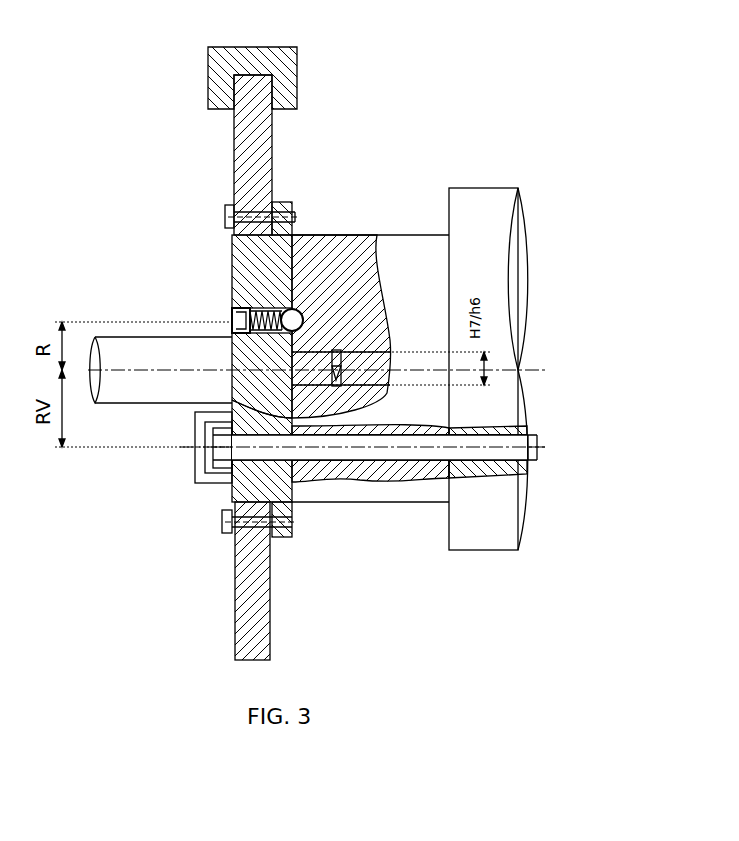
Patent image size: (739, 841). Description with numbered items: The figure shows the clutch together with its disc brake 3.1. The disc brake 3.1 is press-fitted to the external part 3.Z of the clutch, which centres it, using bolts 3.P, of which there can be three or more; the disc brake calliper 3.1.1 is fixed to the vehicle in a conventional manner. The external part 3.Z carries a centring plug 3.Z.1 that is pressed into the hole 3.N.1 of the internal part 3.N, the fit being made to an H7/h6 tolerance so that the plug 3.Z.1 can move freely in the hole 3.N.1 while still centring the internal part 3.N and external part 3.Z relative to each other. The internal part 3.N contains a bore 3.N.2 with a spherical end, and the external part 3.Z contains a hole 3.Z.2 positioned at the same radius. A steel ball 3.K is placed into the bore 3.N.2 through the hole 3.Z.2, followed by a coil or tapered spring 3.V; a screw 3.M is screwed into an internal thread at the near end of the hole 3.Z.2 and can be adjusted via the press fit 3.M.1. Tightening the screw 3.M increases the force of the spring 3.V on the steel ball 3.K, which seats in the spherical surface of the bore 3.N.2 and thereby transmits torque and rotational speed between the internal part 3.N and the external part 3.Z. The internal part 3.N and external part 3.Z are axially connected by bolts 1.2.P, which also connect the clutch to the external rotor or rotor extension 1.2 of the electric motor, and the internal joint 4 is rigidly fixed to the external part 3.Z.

The disc brake calliper 3.1.1 is at (285, 80).
The disc brake 3.1 is at (240, 596).
The bolts 3.P is at (229, 212).
The external part of clutch 3.Z is at (198, 482).
The coil spring 3.V is at (232, 305).
The screw 3.M is at (232, 316).
The press fit 3.M.1 is at (232, 320).
The steel ball 3.K is at (323, 236).
The internal part of clutch 3.N is at (232, 308).
The bore with spherical end 3.N.2 is at (318, 292).
The hole of internal part 3.N.1 is at (386, 356).
The centring plug 3.Z.1 is at (341, 372).
The hole of external part 3.Z.2 is at (262, 343).
The internal joint 4 is at (132, 403).
The bolts 1.2.P is at (213, 440).
The external rotor or rotor extension 1.2 is at (490, 240).